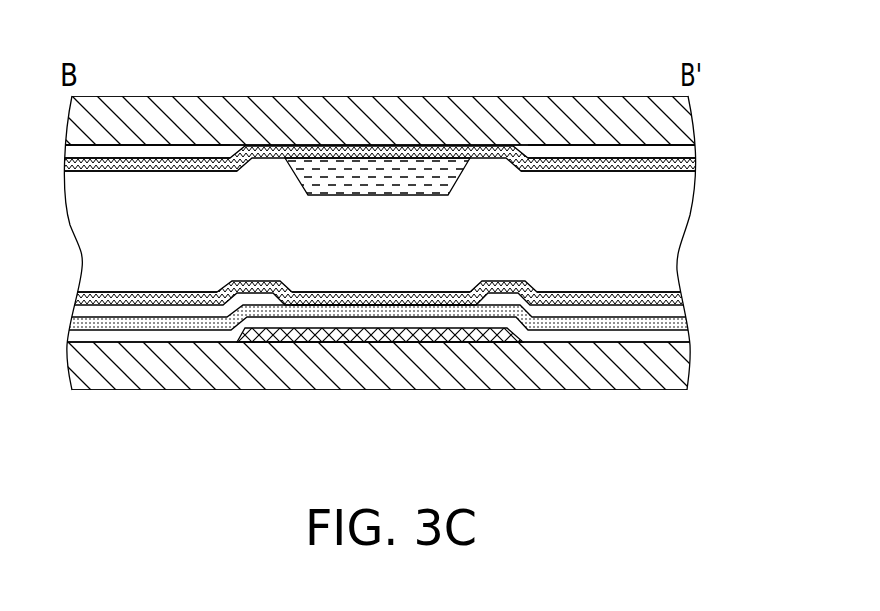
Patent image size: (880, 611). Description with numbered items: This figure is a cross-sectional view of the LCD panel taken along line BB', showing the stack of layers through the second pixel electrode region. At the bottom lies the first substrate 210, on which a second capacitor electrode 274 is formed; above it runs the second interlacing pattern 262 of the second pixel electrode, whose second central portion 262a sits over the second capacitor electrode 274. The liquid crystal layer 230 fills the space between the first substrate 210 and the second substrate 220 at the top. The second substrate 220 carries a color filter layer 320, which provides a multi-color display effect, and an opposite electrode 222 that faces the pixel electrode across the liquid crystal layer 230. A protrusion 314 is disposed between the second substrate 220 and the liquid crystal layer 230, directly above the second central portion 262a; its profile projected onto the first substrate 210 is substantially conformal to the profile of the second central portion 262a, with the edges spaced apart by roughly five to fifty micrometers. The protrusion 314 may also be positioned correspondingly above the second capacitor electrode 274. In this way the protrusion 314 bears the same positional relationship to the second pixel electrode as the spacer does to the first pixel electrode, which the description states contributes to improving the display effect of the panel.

The first substrate 210 is at (637, 368).
The second substrate 220 is at (662, 125).
The opposite electrode 222 is at (697, 160).
The liquid crystal layer 230 is at (635, 230).
The second interlacing pattern 262 is at (680, 298).
The second central portion 262a is at (330, 297).
The second capacitor electrode 274 is at (400, 337).
The protrusion 314 is at (377, 170).
The color filter layer 320 is at (672, 150).